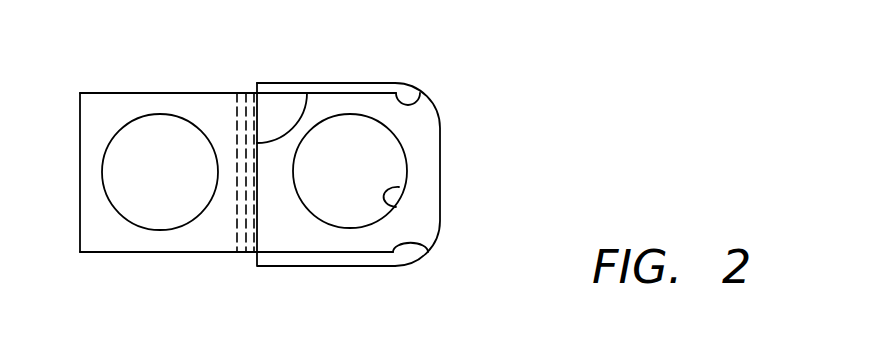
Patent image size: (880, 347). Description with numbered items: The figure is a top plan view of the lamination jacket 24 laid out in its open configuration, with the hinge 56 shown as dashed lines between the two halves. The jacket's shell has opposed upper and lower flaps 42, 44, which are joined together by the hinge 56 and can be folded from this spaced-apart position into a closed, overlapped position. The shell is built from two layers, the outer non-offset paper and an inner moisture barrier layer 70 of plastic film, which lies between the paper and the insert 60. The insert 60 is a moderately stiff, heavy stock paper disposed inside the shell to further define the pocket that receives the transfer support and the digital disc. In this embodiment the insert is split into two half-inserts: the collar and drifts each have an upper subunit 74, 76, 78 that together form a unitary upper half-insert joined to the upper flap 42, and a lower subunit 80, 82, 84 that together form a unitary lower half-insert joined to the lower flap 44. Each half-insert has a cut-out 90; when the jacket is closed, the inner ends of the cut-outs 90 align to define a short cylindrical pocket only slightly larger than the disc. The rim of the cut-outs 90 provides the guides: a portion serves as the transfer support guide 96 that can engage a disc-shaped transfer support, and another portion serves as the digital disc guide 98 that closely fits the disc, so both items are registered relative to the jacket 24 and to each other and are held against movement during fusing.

The lamination jacket 24 is at (585, 180).
The upper flap 42 is at (96, 257).
The lower flap 44 is at (358, 272).
The hinge 56 is at (238, 93).
The insert 60 is at (120, 125).
The moisture barrier layer 70 is at (167, 178).
The upper subunit of collar 74 is at (135, 243).
The upper subunit of drift 76 is at (100, 212).
The upper subunit of drift 78 is at (190, 243).
The lower subunit of collar 80 is at (369, 98).
The lower subunit of drift 82 is at (428, 170).
The lower subunit of drift 84 is at (292, 90).
The cut-out 90 is at (305, 217).
The transfer support guide 96 is at (308, 93).
The digital disc guide 98 is at (392, 209).